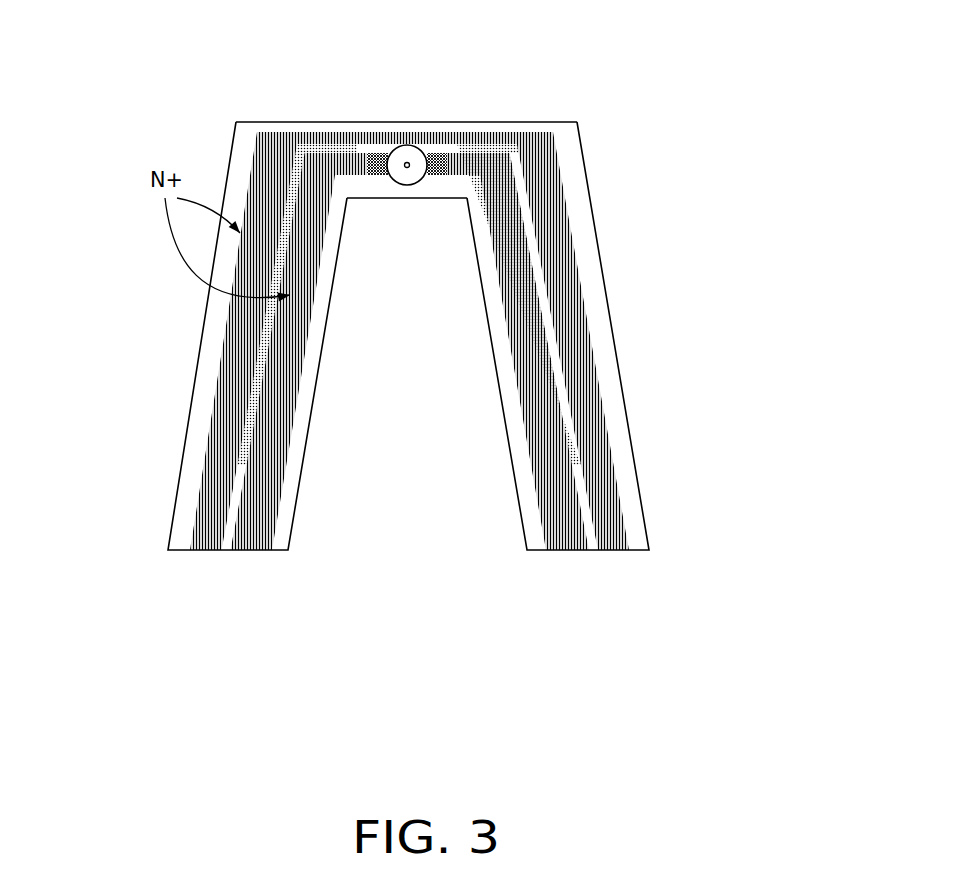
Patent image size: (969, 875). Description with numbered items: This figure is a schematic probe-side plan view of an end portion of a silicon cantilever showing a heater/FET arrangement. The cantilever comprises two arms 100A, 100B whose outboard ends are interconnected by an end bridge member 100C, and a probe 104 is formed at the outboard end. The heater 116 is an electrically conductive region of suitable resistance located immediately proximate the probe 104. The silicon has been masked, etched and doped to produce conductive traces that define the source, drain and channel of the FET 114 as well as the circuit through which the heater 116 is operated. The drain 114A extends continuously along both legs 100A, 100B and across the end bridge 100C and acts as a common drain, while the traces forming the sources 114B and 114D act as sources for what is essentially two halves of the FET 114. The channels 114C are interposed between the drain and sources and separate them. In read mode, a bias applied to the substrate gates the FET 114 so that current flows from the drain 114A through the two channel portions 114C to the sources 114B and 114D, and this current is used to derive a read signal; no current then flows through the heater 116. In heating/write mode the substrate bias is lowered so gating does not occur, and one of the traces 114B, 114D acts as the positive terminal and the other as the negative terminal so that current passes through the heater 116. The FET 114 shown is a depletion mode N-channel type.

The arm 100A is at (300, 440).
The arm 100B is at (618, 407).
The end bridge member 100C is at (413, 125).
The probe 104 is at (400, 177).
The FET 114 is at (443, 413).
The drain 114A is at (197, 557).
The source 114B is at (258, 557).
The channel 114C is at (303, 147).
The source 114D is at (563, 555).
The heater 116 is at (438, 157).